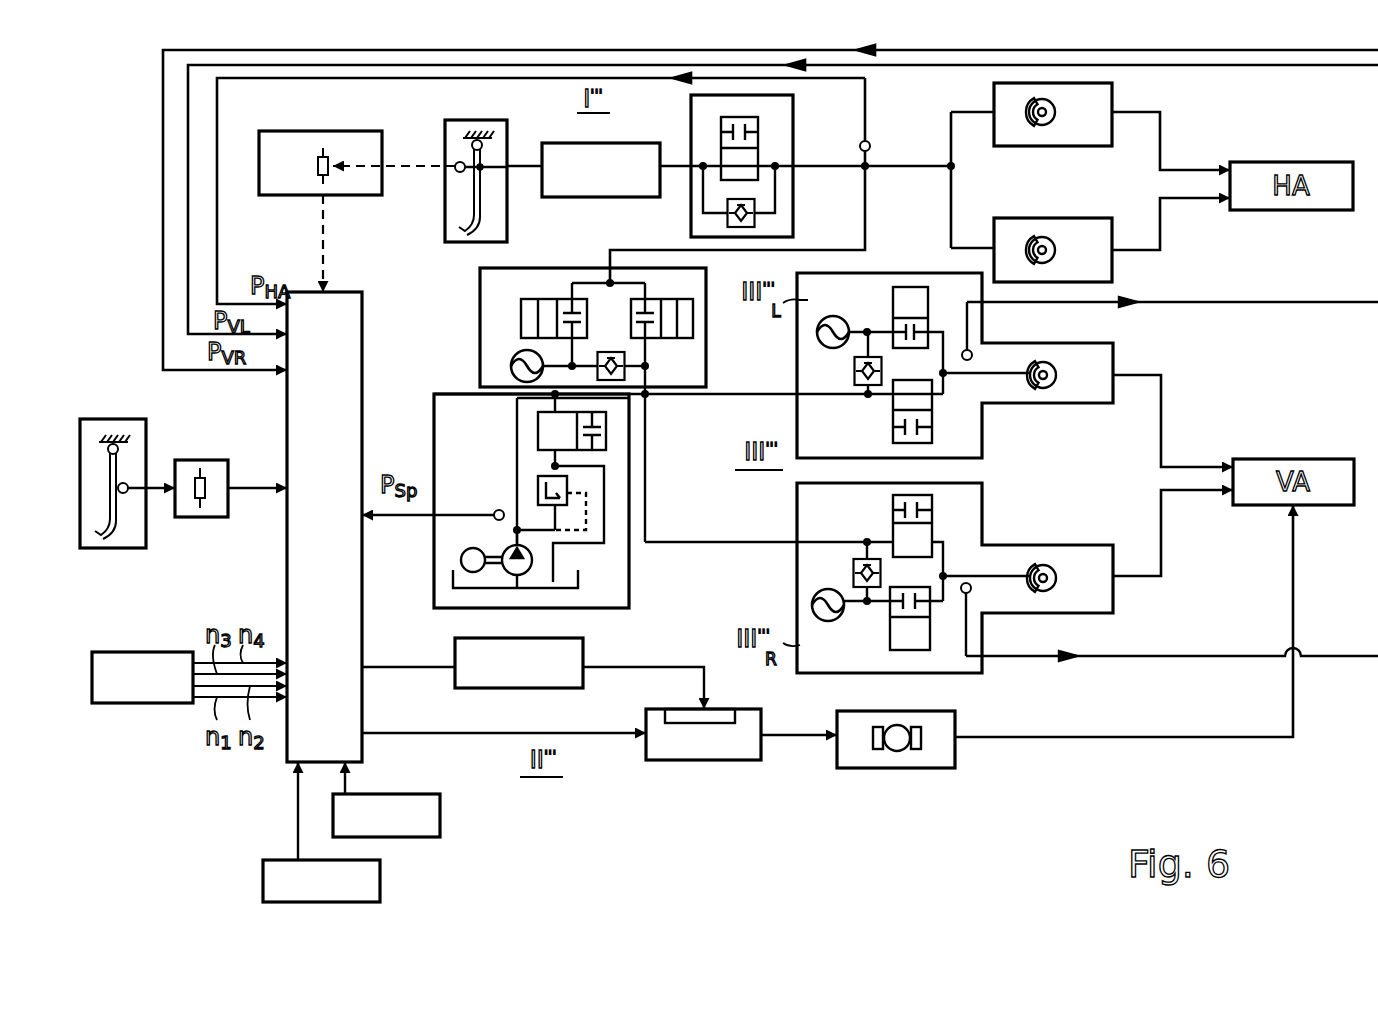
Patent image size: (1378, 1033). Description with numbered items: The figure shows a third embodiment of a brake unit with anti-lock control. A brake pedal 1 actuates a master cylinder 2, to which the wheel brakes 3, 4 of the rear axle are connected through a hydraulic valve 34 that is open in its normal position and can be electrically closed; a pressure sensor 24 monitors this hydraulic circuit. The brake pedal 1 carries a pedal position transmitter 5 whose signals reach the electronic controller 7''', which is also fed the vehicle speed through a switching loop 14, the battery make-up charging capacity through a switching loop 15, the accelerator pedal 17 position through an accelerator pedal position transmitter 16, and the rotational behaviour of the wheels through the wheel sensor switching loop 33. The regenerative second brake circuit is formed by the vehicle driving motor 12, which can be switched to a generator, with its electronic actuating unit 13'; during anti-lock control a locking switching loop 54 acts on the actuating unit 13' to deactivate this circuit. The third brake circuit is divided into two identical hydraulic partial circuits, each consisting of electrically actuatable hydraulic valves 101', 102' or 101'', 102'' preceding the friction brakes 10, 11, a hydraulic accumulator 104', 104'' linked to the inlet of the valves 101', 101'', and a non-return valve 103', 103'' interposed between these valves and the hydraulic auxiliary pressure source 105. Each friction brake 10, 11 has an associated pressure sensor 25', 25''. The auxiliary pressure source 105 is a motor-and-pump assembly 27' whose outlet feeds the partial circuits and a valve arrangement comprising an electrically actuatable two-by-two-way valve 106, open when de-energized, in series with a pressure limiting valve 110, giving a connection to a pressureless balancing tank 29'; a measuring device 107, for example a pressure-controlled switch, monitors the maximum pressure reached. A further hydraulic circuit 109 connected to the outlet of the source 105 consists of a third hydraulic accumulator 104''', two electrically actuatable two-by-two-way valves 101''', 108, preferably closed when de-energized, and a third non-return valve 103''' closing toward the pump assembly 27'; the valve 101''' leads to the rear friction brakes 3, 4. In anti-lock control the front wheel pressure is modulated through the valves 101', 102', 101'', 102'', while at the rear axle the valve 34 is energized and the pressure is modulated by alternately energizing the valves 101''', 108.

The brake pedal 1 is at (495, 124).
The master cylinder 2 is at (636, 143).
The wheel brake 3 is at (1093, 102).
The wheel brake 4 is at (1078, 232).
The pedal position transmitter 5 is at (290, 140).
The electronic controller 7''' is at (350, 517).
The friction brake 10 is at (1052, 392).
The friction brake 11 is at (1050, 566).
The vehicle driving motor 12 is at (897, 758).
The electronic actuating unit 13' is at (561, 761).
The switching loop 14 is at (360, 887).
The switching loop 15 is at (423, 820).
The accelerator pedal position transmitter 16 is at (212, 505).
The accelerator pedal 17 is at (117, 533).
The pressure sensor 24 is at (870, 146).
The pressure sensor 25' is at (1170, 328).
The pressure sensor 25'' is at (1169, 622).
The motor-and-pump assembly 27' is at (469, 559).
The pressureless balancing tank 29' is at (574, 594).
The switching loop 33 is at (175, 688).
The hydraulic valve 34 is at (782, 130).
The locking switching loop 54 is at (590, 653).
The 2/2-way valve 101''' is at (583, 292).
The hydraulic valve 101' is at (955, 302).
The hydraulic valve 101'' is at (858, 649).
The hydraulic valve 102' is at (882, 414).
The hydraulic valve 102'' is at (924, 547).
The non-return valve 103''' is at (654, 366).
The non-return valve 103' is at (806, 383).
The non-return valve 103'' is at (803, 571).
The hydraulic accumulator 104''' is at (503, 365).
The hydraulic accumulator 104' is at (850, 279).
The hydraulic accumulator 104'' is at (808, 599).
The hydraulic auxiliary pressure source 105 is at (610, 565).
The 2/2-way valve 106 is at (606, 432).
The measuring device 107 is at (498, 507).
The 2/2-way valve 108 is at (653, 308).
The hydraulic circuit 109 is at (706, 345).
The pressure limiting valve 110 is at (567, 485).